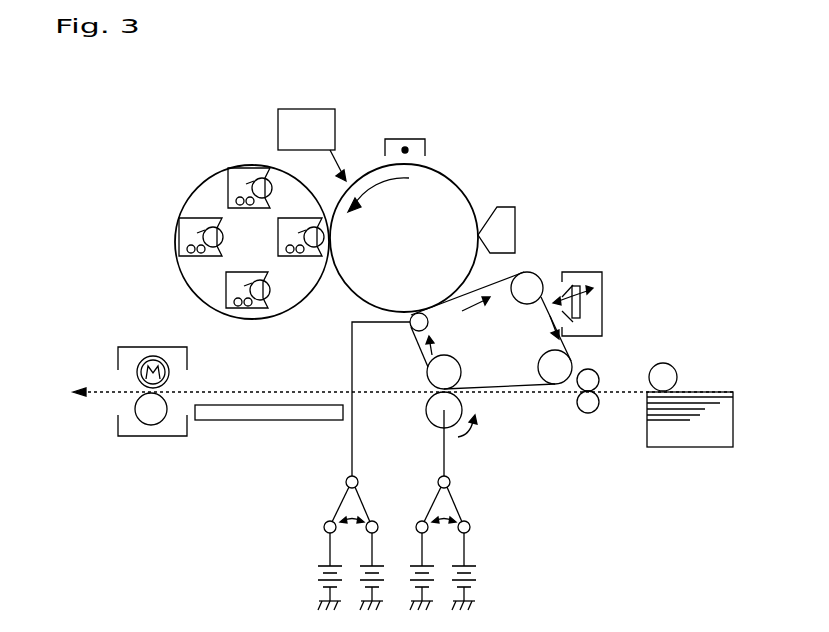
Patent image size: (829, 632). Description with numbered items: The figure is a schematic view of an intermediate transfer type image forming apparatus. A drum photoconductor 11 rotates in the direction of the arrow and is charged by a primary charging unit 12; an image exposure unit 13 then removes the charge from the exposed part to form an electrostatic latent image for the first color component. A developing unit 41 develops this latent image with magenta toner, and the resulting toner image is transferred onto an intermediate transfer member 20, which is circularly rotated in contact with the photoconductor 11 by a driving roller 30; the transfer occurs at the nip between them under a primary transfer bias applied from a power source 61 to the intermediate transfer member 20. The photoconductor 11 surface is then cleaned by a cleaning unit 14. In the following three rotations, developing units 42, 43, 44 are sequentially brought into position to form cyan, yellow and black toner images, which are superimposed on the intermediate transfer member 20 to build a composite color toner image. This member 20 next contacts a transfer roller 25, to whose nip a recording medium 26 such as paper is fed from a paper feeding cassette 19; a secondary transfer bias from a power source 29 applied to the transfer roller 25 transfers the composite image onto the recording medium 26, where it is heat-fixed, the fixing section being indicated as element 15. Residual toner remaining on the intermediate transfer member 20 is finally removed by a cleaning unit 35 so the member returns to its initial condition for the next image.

The drum photoconductor 11 is at (408, 217).
The primary charging unit 12 is at (412, 115).
The image exposure unit 13 is at (332, 145).
The cleaning unit 14 is at (510, 201).
The fixing device 15 is at (152, 362).
The paper feeding cassette 19 is at (690, 451).
The intermediate transfer member 20 is at (540, 262).
The transfer roller 25 is at (434, 436).
The recording medium 26 is at (694, 362).
The power source 29 is at (481, 543).
The driving roller 30 is at (506, 305).
The cleaning unit 35 is at (614, 304).
The developing unit 41 is at (306, 275).
The developing unit 42 is at (250, 158).
The developing unit 43 is at (169, 233).
The developing unit 44 is at (253, 327).
The power source 61 is at (313, 543).